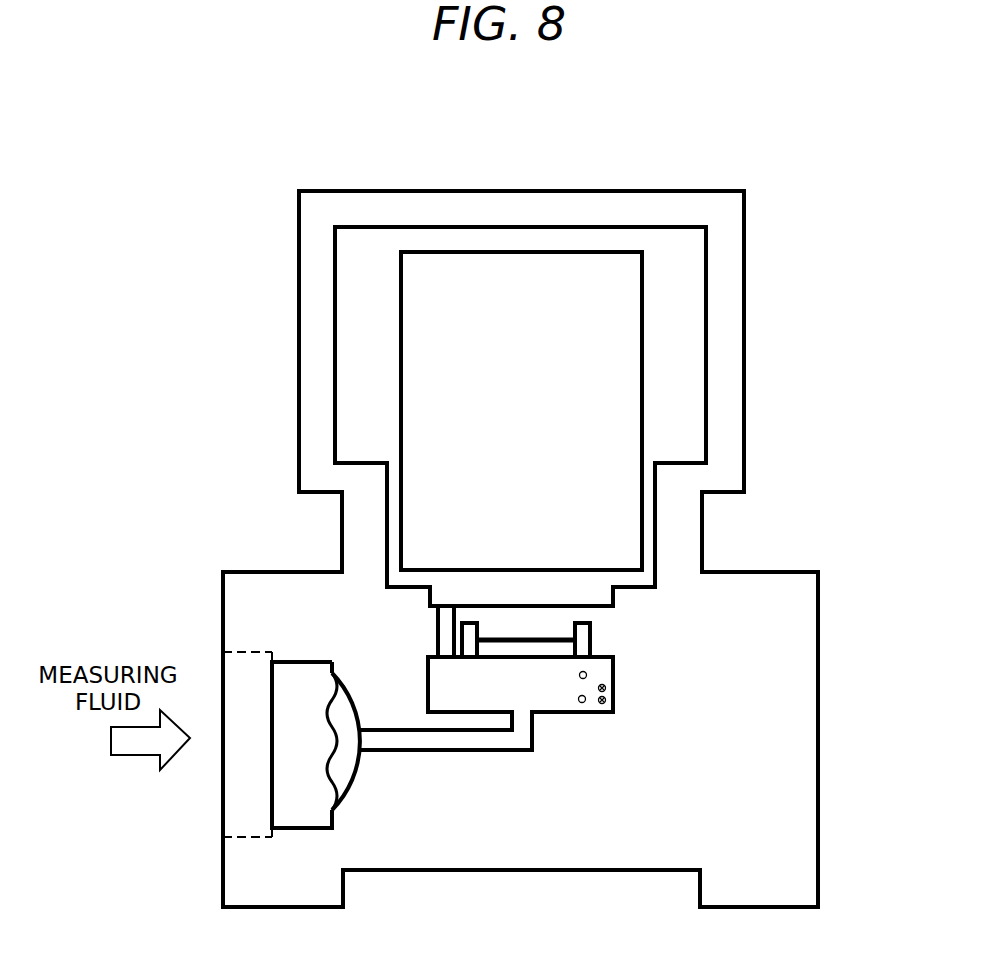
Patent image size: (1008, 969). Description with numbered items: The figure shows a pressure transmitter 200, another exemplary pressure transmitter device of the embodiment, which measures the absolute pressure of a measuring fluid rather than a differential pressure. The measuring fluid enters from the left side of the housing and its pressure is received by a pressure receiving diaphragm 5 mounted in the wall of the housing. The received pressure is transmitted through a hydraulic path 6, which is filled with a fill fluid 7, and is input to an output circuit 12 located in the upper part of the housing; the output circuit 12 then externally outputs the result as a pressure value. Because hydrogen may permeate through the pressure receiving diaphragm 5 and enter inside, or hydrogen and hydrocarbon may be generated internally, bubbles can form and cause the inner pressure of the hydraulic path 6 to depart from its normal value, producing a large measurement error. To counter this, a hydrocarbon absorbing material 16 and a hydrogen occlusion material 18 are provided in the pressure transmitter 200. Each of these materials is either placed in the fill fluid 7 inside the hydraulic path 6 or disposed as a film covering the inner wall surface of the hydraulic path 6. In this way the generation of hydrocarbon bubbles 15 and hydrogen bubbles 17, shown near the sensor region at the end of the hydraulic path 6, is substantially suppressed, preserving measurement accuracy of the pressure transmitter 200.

The pressure transmitter 200 is at (761, 154).
The output circuit 12 is at (540, 400).
The hydraulic path 6 is at (395, 727).
The fill fluid 7 is at (427, 742).
The pressure receiving diaphragm 5 is at (322, 722).
The hydrocarbon bubbles 15 is at (580, 710).
The hydrocarbon absorbing material 16 is at (605, 685).
The hydrogen bubbles 17 is at (587, 670).
The hydrogen occlusion material 18 is at (603, 710).